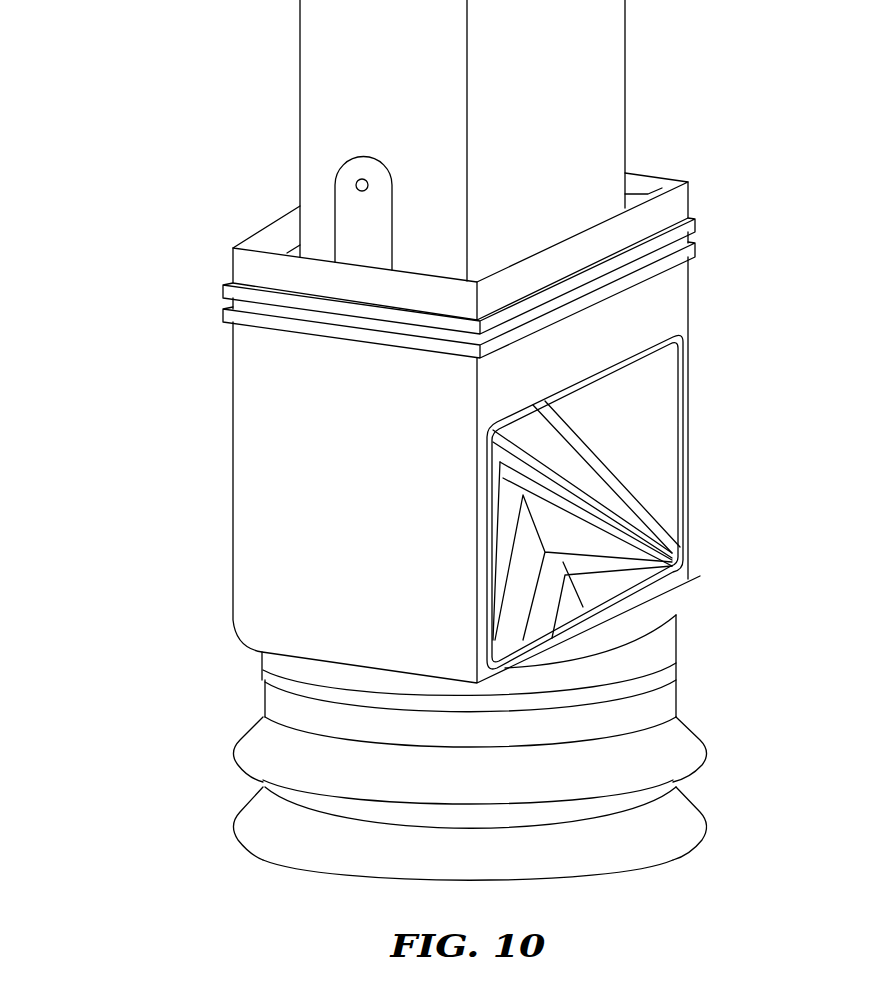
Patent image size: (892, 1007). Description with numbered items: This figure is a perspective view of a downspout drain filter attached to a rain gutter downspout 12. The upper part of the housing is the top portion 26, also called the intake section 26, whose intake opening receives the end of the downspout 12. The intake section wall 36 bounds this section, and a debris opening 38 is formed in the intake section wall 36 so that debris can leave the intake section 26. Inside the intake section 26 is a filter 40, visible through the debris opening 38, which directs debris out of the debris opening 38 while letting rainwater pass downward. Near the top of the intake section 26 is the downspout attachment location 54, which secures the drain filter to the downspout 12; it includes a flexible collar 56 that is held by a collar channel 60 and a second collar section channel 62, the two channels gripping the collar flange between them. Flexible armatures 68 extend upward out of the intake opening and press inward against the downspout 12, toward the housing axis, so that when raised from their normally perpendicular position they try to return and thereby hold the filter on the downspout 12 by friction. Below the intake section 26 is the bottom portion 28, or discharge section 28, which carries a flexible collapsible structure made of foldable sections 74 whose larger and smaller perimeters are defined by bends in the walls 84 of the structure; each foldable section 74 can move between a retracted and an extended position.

The rain gutter downspout 12 is at (563, 38).
The top portion 26 is at (403, 457).
The bottom portion 28 is at (467, 747).
The intake section wall 36 is at (258, 603).
The debris opening 38 is at (622, 502).
The filter 40 is at (657, 572).
The downspout attachment location 54 is at (181, 300).
The flexible collar 56 is at (646, 193).
The collar channel 60 is at (223, 285).
The second collar section channel 62 is at (223, 322).
The armatures 68 is at (348, 205).
The foldable sections 74 is at (461, 798).
The walls 84 is at (682, 820).